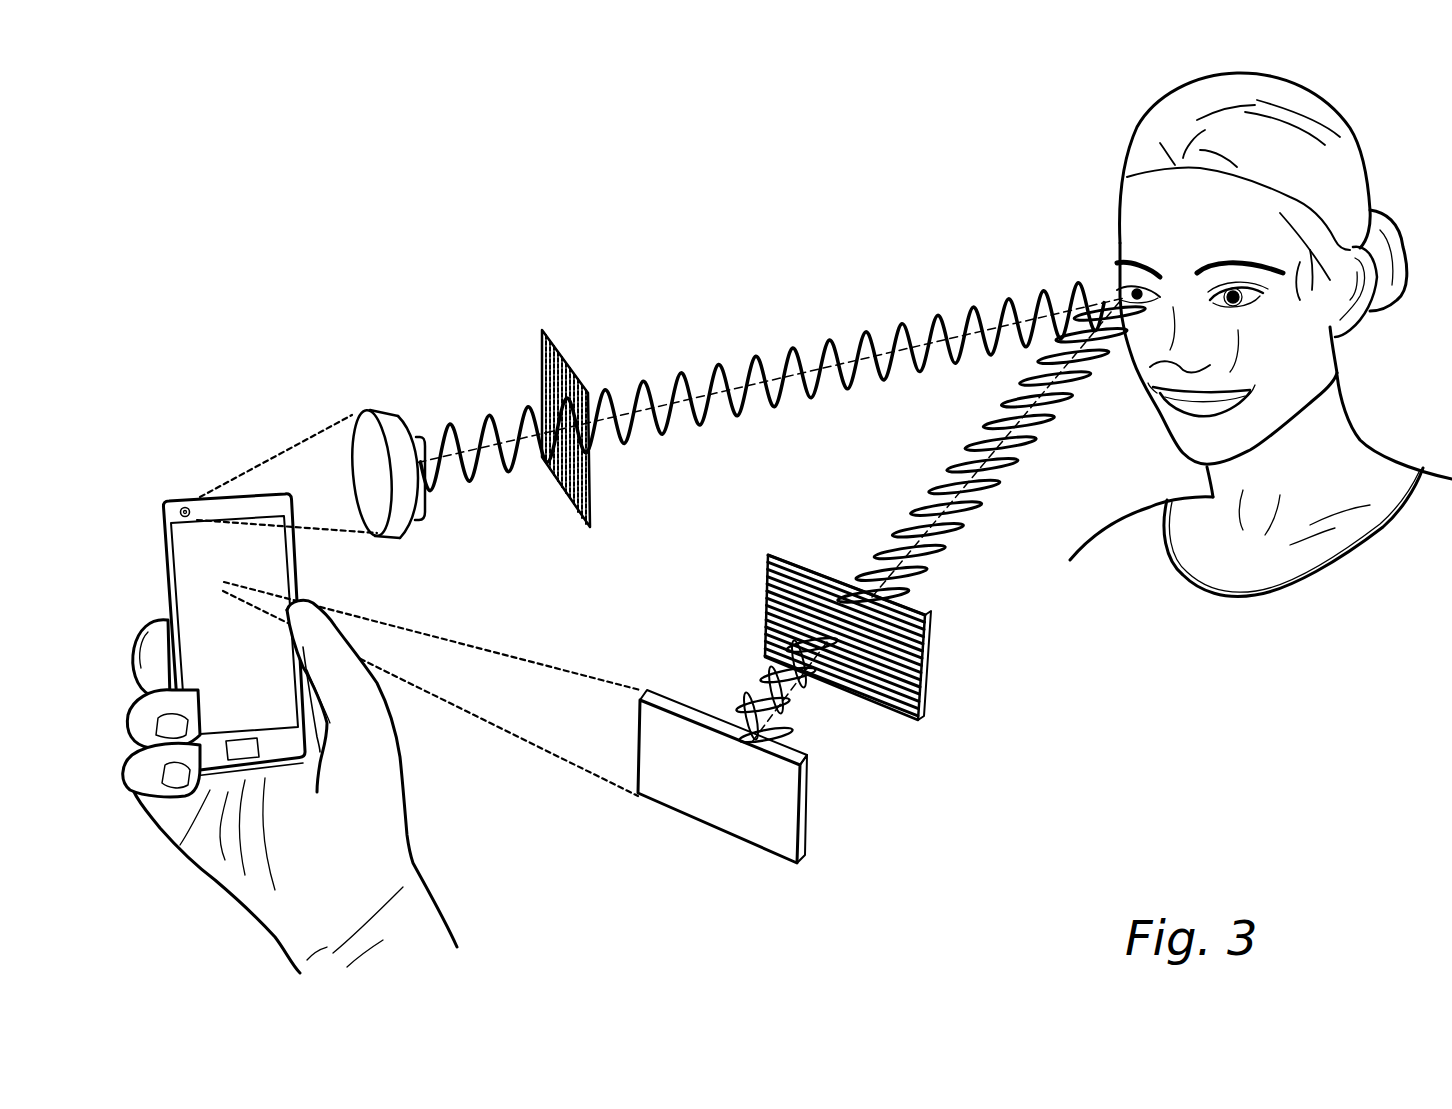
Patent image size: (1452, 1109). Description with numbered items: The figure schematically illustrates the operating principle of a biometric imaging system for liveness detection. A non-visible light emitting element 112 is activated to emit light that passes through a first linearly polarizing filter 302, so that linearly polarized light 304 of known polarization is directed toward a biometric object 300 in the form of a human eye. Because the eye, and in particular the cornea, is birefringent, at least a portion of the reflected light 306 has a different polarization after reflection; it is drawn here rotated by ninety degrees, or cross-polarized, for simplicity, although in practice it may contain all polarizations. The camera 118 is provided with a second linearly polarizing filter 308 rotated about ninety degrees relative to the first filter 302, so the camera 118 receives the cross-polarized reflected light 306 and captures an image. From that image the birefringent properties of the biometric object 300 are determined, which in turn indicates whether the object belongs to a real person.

The non-visible light emitting element 112 is at (221, 585).
The camera 118 is at (187, 506).
The biometric object 300 is at (1170, 323).
The first linearly polarizing filter 302 is at (880, 683).
The linearly polarized light 304 is at (1014, 466).
The reflected light 306 is at (975, 302).
The second linearly polarizing filter 308 is at (570, 370).